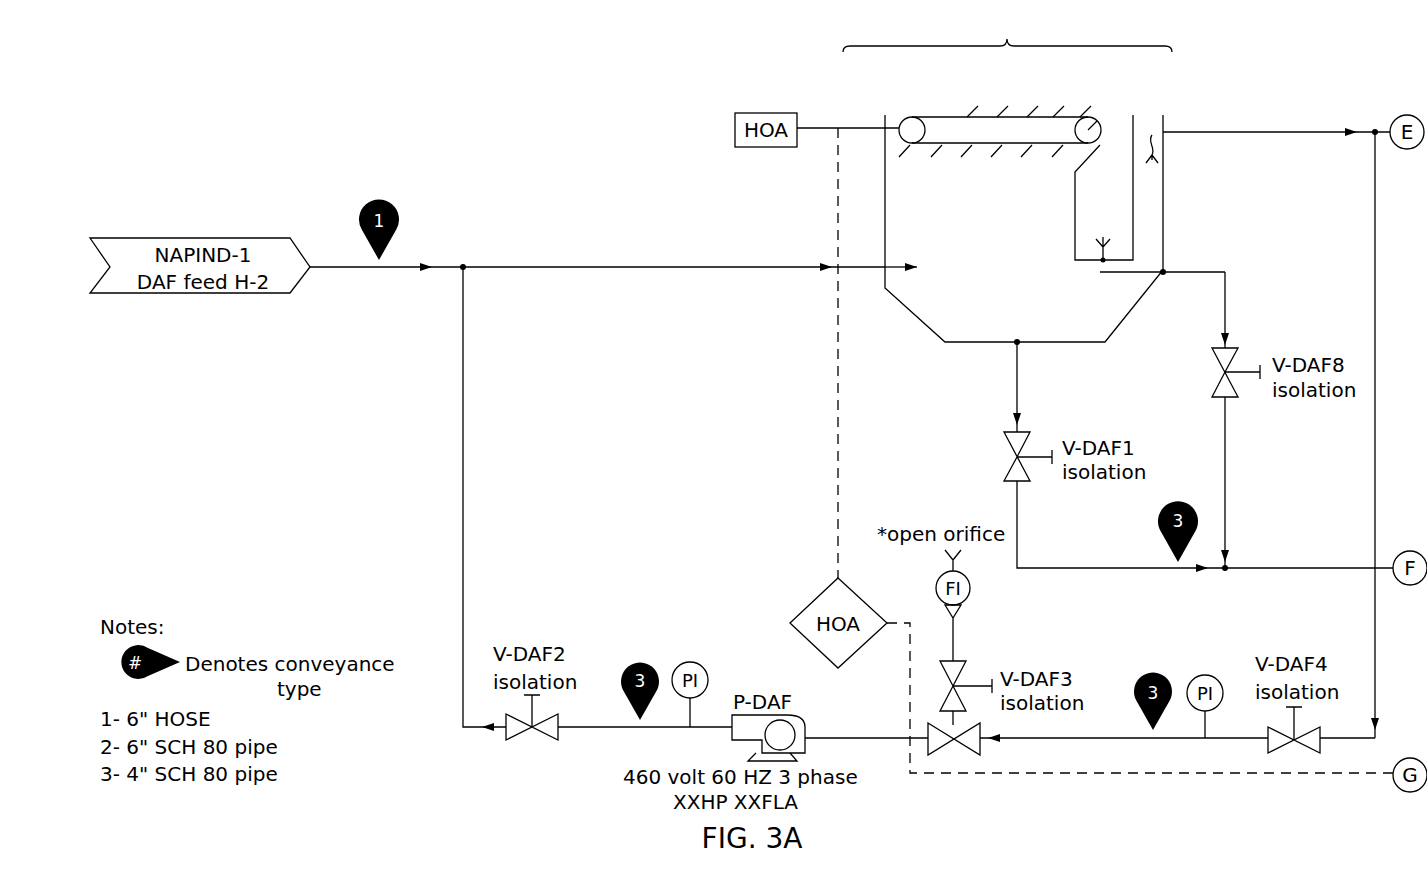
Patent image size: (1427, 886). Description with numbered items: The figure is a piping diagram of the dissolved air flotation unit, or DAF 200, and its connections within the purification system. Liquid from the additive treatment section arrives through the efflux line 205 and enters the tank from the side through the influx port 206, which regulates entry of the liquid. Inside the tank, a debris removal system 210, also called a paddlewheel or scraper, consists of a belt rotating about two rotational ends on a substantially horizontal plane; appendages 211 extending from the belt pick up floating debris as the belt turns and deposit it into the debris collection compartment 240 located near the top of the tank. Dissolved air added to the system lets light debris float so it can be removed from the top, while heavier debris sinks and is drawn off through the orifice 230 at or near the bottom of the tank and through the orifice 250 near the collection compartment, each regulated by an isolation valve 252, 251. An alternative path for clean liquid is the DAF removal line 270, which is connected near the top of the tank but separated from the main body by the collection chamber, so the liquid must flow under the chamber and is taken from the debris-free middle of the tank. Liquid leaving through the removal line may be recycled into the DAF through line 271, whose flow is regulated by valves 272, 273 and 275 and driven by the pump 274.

The dissolved air flotation unit 200 is at (1007, 176).
The efflux line 205 is at (328, 265).
The influx port 206 is at (877, 270).
The debris removal system 210 is at (1072, 116).
The appendages 211 is at (966, 116).
The bottom orifice 230 is at (1014, 343).
The debris collection compartment 240 is at (1093, 191).
The debris removal orifice 250 is at (1103, 275).
The isolation valve V-DAF8 251 is at (1228, 341).
The isolation valve V-DAF1 252 is at (1004, 437).
The DAF removal line 270 is at (1207, 132).
The recycle line 271 is at (1375, 224).
The valve 272 is at (1268, 747).
The valve 273 is at (985, 745).
The pump 274 is at (808, 733).
The valve 275 is at (513, 741).